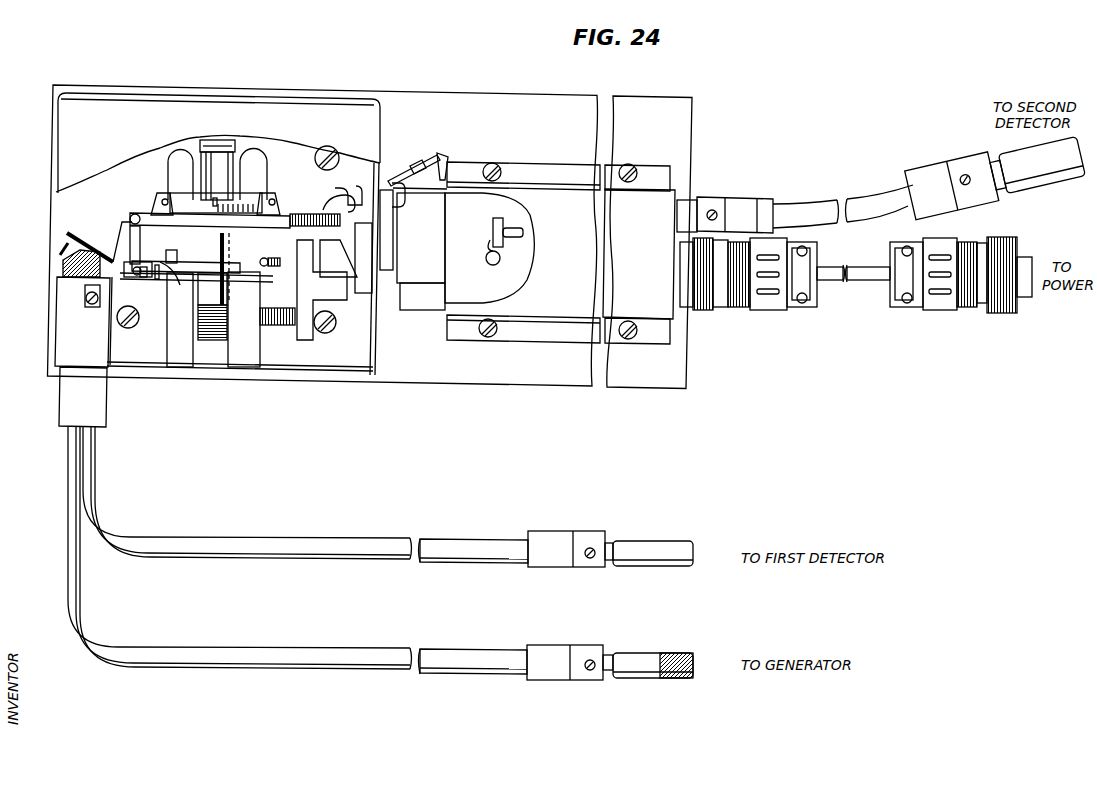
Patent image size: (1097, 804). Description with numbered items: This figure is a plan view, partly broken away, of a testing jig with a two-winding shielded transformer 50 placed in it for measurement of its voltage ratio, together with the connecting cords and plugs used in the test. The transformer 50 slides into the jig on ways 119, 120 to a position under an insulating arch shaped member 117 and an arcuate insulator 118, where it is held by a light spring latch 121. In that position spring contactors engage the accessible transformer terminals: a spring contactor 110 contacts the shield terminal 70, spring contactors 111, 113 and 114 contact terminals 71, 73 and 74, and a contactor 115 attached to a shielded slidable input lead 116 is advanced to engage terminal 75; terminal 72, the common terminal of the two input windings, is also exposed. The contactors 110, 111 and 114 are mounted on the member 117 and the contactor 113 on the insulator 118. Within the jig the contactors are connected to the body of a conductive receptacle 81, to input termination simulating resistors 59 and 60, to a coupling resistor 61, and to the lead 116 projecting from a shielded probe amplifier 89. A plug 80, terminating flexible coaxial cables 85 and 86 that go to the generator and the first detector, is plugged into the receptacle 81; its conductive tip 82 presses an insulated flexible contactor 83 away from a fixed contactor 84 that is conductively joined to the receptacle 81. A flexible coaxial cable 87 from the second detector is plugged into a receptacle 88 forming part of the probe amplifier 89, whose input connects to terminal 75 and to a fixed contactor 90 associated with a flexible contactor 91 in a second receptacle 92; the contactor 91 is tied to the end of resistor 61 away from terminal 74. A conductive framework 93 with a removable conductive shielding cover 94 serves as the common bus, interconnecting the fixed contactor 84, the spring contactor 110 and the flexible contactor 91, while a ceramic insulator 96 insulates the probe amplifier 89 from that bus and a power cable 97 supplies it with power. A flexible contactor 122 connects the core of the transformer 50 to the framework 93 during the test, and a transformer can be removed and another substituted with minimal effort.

The transformer 50 is at (192, 270).
The input termination simulating resistor 59 is at (311, 214).
The input termination simulating resistor 60 is at (130, 279).
The resistor 61 is at (350, 207).
The terminal 70 is at (167, 200).
The terminal 71 is at (225, 212).
The terminal 72 is at (218, 202).
The terminal 73 is at (176, 256).
The terminal 74 is at (268, 204).
The terminal 75 is at (266, 268).
The plug 80 is at (100, 411).
The conductive receptacle 81 is at (62, 343).
The conductive tip 82 is at (90, 265).
The insulated flexible contactor 83 is at (73, 238).
The fixed contactor 84 is at (60, 249).
The flexible coaxial cable 85 is at (248, 672).
The flexible coaxial cable 86 is at (255, 536).
The flexible coaxial cable 87 is at (818, 205).
The receptacle 88 is at (688, 195).
The shielded probe amplifier 89 is at (640, 196).
The fixed contactor 90 is at (445, 158).
The flexible contactor 91 is at (422, 158).
The receptacle 92 is at (420, 275).
The conductive framework 93 is at (292, 360).
The removable conductive shielding cover 94 is at (120, 100).
The ceramic insulator 96 is at (418, 168).
The power cable 97 is at (833, 285).
The spring contactor 110 is at (155, 206).
The spring contactor 111 is at (230, 210).
The spring contactor 113 is at (170, 256).
The spring contactor 114 is at (295, 213).
The spring contactor 115 is at (276, 272).
The shielded slidable input lead 116 is at (323, 256).
The insulating arch shaped member 117 is at (180, 222).
The arcuate insulator 118 is at (157, 280).
The way 119 is at (180, 358).
The way 120 is at (248, 360).
The light spring latch 121 is at (215, 357).
The flexible contactor 122 is at (212, 140).